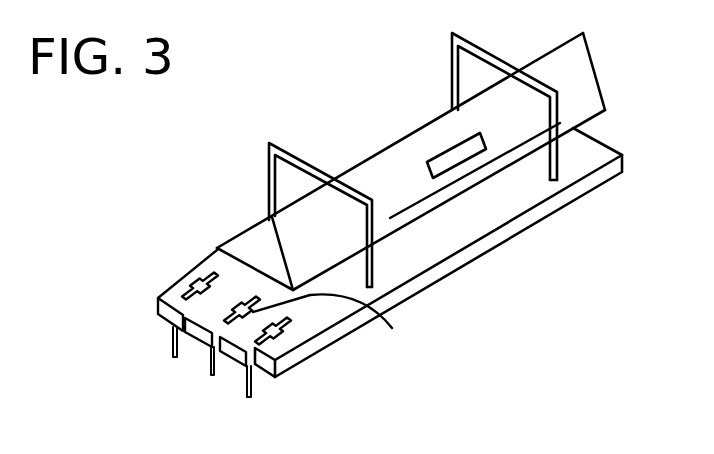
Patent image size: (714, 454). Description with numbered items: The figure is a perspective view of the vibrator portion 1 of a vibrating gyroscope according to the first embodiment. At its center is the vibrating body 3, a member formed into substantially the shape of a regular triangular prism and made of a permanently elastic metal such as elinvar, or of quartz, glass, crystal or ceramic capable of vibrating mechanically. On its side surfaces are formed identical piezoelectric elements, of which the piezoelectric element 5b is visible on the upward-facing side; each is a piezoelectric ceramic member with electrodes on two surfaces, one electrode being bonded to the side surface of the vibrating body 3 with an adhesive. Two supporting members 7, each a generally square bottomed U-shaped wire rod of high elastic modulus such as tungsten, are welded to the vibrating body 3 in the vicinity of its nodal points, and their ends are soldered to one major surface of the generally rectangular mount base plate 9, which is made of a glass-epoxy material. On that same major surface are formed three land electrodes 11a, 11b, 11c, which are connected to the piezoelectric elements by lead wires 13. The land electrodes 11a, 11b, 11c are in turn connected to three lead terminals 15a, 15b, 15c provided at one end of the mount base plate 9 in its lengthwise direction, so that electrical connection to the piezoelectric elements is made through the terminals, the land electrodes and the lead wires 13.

The vibrator portion 1 is at (302, 55).
The vibrating body 3 is at (584, 78).
The piezoelectric element 5b is at (447, 150).
The supporting member 7 is at (268, 183).
The mount base plate 9 is at (590, 153).
The land electrode 11a is at (197, 277).
The land electrode 11b is at (315, 323).
The land electrode 11c is at (290, 338).
The lead wire 13 is at (410, 205).
The lead terminal 15a is at (173, 333).
The lead terminal 15b is at (210, 362).
The lead terminal 15c is at (253, 388).